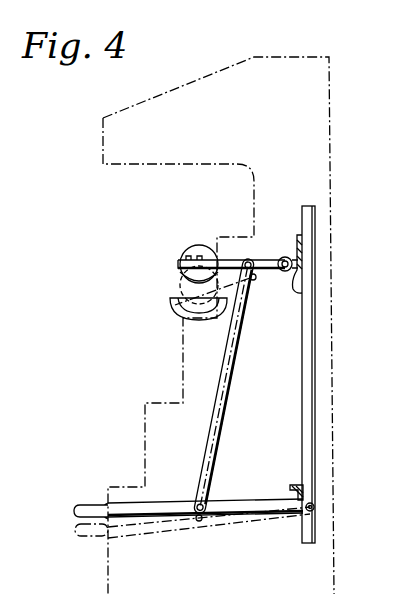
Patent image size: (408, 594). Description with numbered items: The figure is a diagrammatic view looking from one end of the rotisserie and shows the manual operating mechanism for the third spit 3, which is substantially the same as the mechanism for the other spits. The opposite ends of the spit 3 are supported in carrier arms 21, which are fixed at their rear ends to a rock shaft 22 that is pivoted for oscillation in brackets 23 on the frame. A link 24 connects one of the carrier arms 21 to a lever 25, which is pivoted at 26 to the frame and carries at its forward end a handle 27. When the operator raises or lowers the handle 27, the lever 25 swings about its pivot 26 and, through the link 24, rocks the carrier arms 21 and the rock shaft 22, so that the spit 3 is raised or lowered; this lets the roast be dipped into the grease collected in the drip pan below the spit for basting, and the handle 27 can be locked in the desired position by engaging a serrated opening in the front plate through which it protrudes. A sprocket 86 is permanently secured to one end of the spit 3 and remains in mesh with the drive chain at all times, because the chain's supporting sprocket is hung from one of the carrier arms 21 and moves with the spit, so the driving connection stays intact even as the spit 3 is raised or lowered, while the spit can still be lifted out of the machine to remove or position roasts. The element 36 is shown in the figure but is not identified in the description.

The third spit 3 is at (182, 258).
The sprocket 86 is at (199, 246).
The carrier arms 21 is at (178, 266).
The lower clamp member 36 is at (183, 313).
The rock shaft 22 is at (292, 263).
The brackets 23 is at (305, 292).
The link 24 is at (227, 397).
The lever 25 is at (175, 510).
The pivot 26 is at (315, 506).
The handle 27 is at (75, 511).